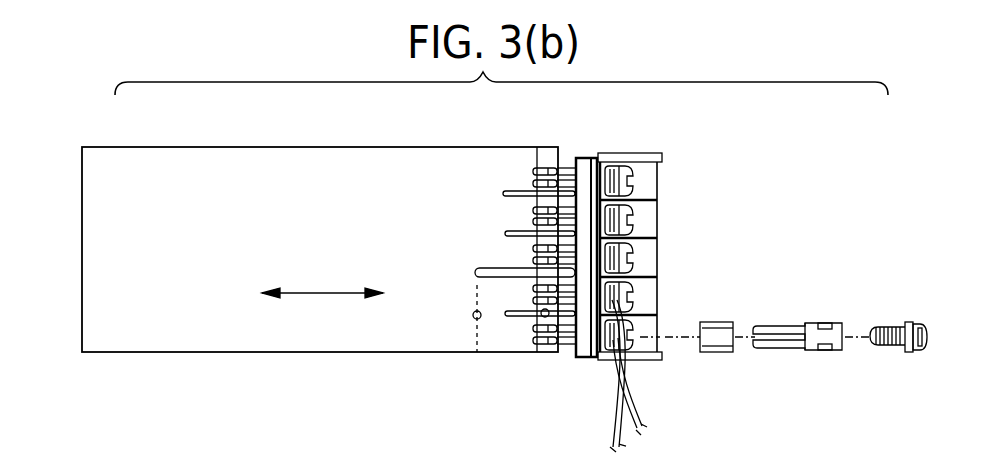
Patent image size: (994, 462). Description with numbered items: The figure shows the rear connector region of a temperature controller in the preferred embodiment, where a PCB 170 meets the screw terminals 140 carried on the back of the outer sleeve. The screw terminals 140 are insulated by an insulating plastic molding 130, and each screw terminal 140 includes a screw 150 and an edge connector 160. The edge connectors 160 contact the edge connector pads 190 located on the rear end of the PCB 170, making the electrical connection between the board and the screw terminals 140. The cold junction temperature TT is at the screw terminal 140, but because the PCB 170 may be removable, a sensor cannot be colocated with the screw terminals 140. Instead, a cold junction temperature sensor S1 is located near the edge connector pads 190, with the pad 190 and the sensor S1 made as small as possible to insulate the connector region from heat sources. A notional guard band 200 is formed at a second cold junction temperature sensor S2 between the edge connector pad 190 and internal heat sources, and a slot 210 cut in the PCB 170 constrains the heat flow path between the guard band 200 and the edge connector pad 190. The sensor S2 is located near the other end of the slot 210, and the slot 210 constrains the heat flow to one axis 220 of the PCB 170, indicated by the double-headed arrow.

The insulating plastic molding 130 is at (662, 158).
The screw terminal 140 is at (643, 255).
The screw 150 is at (640, 180).
The edge connector 160 is at (608, 287).
The PCB 170 is at (82, 330).
The edge connector pad 190 is at (545, 167).
The guard band 200 is at (516, 297).
The slot 210 is at (478, 267).
The axis 220 is at (322, 280).
The cold junction temperature sensor S1 is at (543, 316).
The cold junction temperature sensor S2 is at (473, 318).
The cold junction temperature TT is at (633, 297).